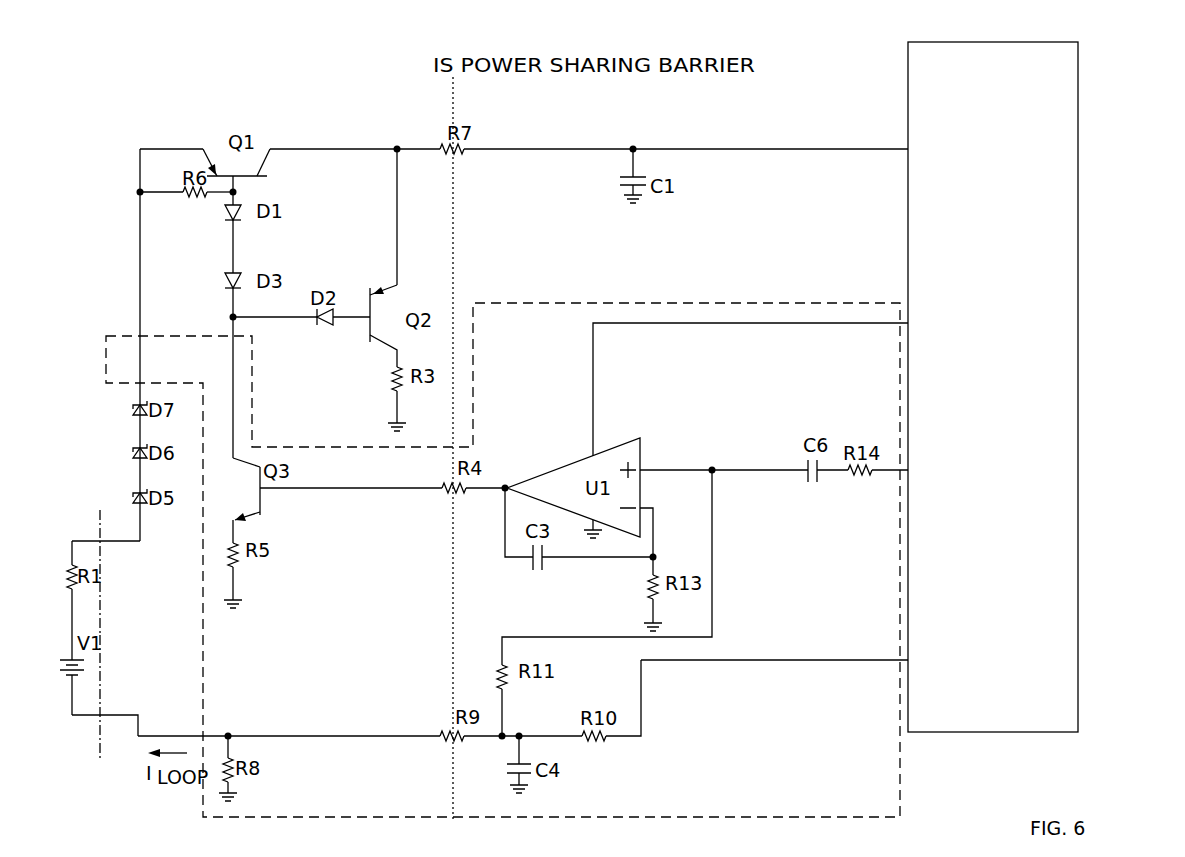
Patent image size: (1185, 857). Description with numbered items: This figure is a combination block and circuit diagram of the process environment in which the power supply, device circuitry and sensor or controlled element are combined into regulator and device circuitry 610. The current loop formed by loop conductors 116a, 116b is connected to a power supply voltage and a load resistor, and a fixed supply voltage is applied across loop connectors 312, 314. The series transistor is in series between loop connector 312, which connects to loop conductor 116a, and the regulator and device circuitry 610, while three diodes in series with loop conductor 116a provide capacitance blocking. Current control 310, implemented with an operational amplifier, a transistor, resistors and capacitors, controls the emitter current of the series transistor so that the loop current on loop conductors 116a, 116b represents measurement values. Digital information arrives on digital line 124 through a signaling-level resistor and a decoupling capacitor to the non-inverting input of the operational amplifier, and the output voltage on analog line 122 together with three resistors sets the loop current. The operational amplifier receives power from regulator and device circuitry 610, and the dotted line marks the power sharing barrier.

The regulator and device circuitry 610 is at (908, 78).
The current control 310 is at (900, 768).
The loop connector 312 is at (102, 540).
The loop connector 314 is at (99, 717).
The loop conductor 116a is at (74, 541).
The loop conductor 116b is at (73, 716).
The analog line 122 is at (810, 659).
The digital line 124 is at (893, 470).